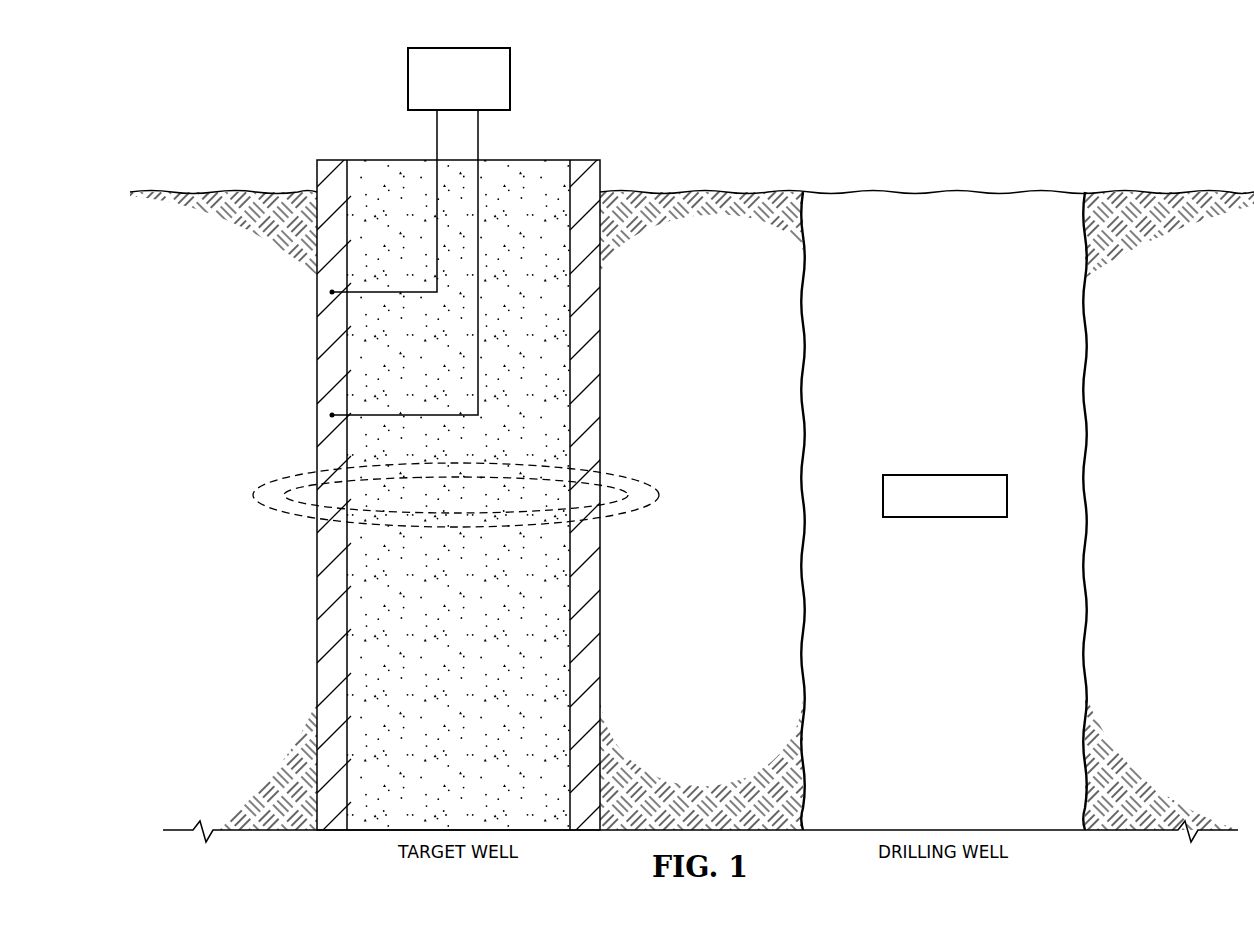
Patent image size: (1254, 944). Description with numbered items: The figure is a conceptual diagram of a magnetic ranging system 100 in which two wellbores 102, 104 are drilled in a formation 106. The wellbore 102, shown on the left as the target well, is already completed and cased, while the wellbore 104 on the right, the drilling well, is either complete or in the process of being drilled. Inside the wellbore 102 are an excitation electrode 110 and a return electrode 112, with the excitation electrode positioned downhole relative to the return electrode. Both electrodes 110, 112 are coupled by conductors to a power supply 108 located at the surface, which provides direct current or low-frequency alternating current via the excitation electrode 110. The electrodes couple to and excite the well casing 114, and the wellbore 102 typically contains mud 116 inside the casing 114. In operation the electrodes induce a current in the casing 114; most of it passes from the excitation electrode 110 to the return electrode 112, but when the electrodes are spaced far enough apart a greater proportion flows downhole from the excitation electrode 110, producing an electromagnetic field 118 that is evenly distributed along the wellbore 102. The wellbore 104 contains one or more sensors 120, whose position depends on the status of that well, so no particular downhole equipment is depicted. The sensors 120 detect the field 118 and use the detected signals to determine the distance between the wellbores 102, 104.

The magnetic ranging system 100 is at (950, 95).
The wellbore 102 is at (341, 137).
The wellbore 104 is at (1061, 137).
The formation 106 is at (1196, 418).
The power supply 108 is at (408, 79).
The excitation electrode 110 is at (332, 415).
The return electrode 112 is at (332, 292).
The well casing 114 is at (325, 676).
The mud 116 is at (477, 672).
The electromagnetic field 118 is at (239, 498).
The sensors 120 is at (945, 475).